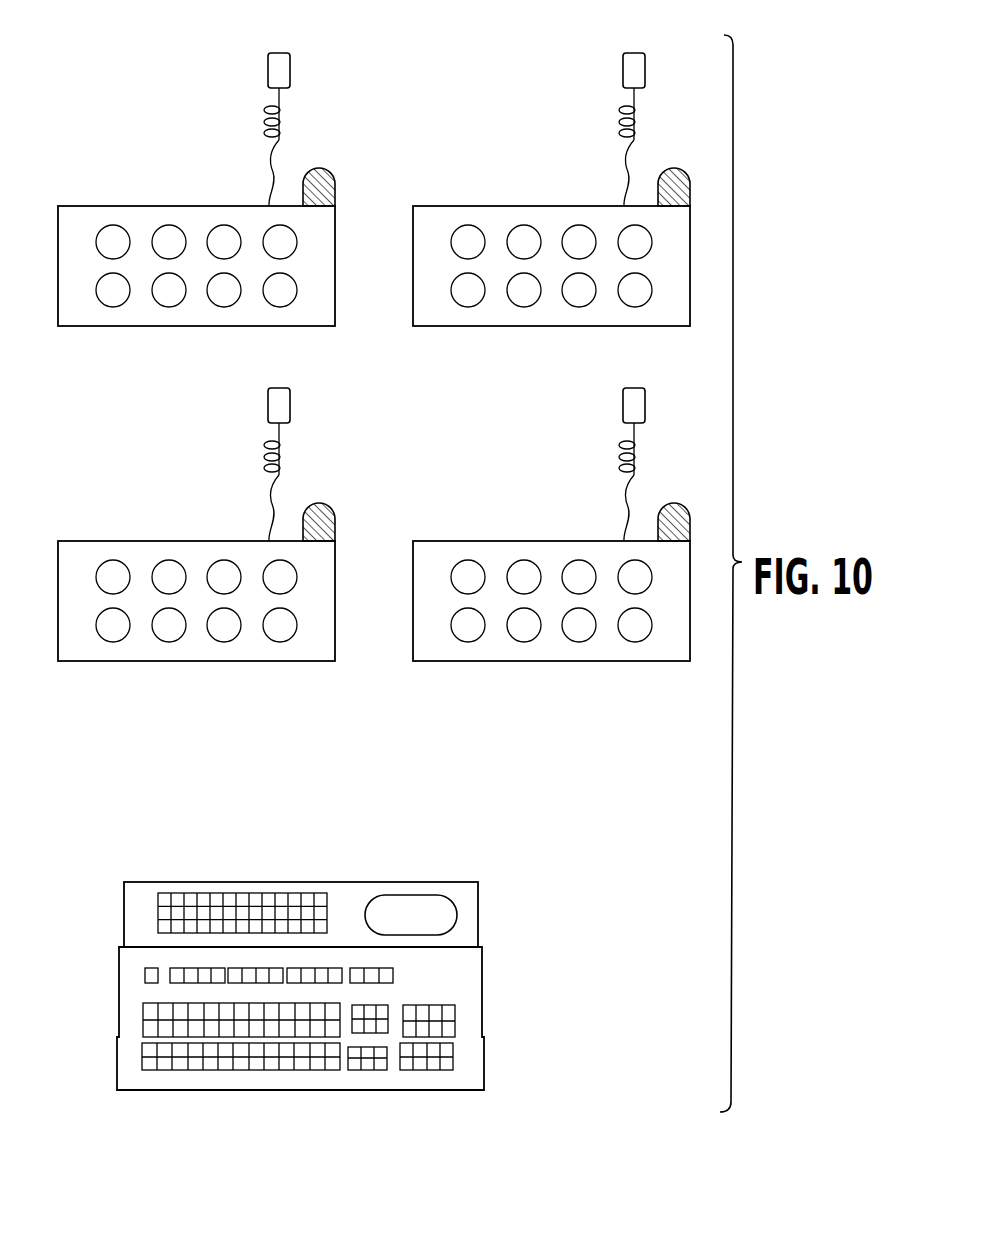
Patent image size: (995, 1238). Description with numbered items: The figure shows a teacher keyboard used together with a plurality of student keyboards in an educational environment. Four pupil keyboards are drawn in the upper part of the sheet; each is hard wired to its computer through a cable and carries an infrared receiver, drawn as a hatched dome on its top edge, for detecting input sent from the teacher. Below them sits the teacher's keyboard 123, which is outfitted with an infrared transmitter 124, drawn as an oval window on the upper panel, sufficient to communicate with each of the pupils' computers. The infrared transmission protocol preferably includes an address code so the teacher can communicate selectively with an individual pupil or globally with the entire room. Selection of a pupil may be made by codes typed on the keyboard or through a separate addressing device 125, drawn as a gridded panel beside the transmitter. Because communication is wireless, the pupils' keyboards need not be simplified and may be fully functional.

The teacher's keyboard 123 is at (460, 985).
The infrared transmitter 124 is at (457, 913).
The addressing device 125 is at (243, 900).